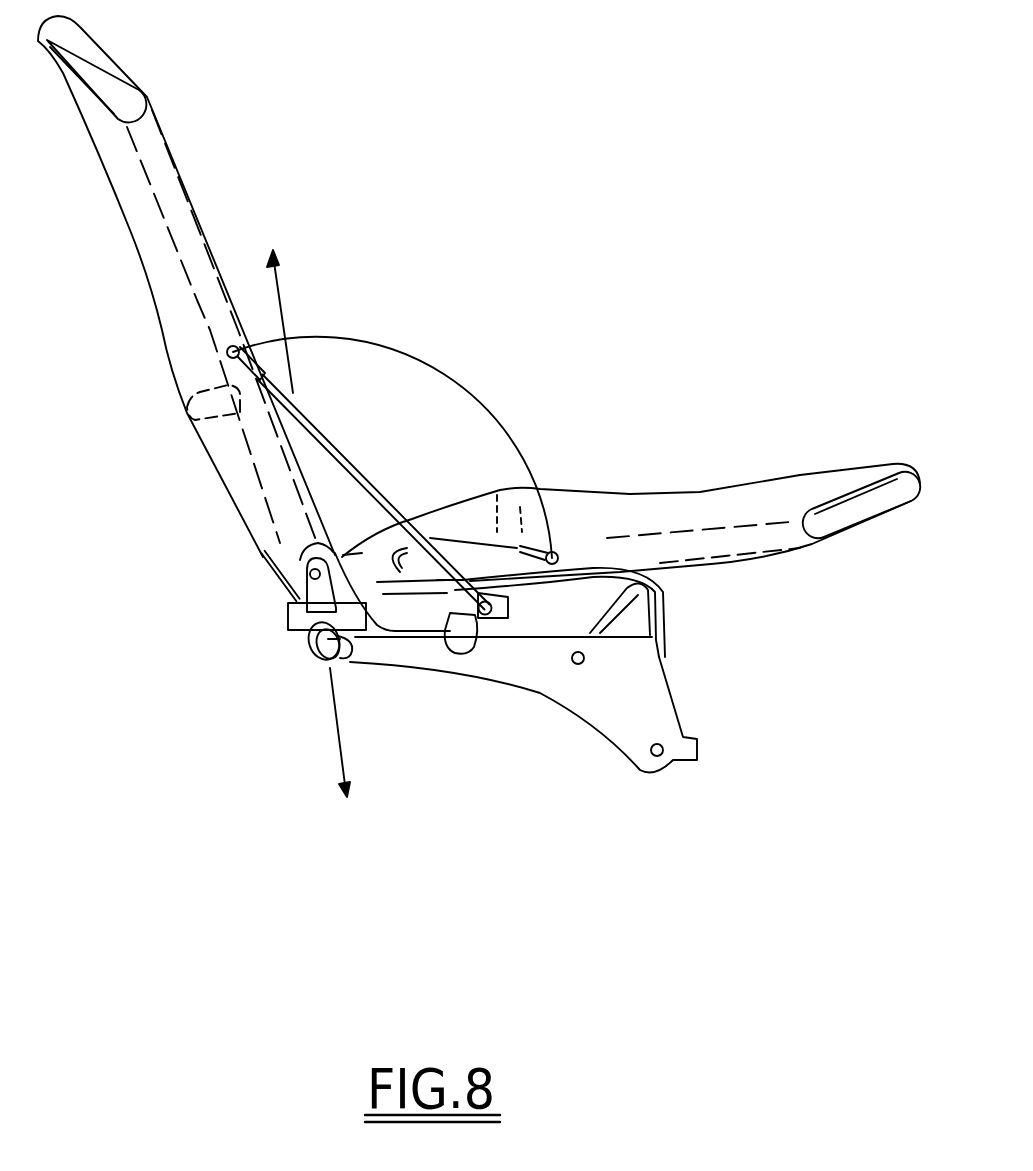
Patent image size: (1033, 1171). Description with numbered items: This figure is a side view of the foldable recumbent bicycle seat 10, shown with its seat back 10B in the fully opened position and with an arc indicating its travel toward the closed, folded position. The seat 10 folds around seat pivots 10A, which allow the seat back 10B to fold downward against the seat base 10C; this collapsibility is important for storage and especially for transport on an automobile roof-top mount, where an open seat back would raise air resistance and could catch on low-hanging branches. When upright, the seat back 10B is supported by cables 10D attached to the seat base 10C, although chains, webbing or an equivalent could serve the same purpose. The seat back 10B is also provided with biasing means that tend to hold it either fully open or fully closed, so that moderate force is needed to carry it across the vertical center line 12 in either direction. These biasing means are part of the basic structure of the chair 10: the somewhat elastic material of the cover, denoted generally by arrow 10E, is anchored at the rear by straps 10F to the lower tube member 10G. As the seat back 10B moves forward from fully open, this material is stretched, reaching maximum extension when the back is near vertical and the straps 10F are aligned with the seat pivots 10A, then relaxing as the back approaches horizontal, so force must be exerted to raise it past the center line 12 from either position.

The seat 10 is at (556, 97).
The seat pivots 10A is at (295, 579).
The seat back 10B is at (183, 167).
The seat base 10C is at (667, 615).
The cables 10D is at (317, 445).
The cover 10E is at (138, 287).
The straps 10F is at (314, 660).
The lower tube member 10G is at (350, 658).
The center line 12 is at (280, 292).